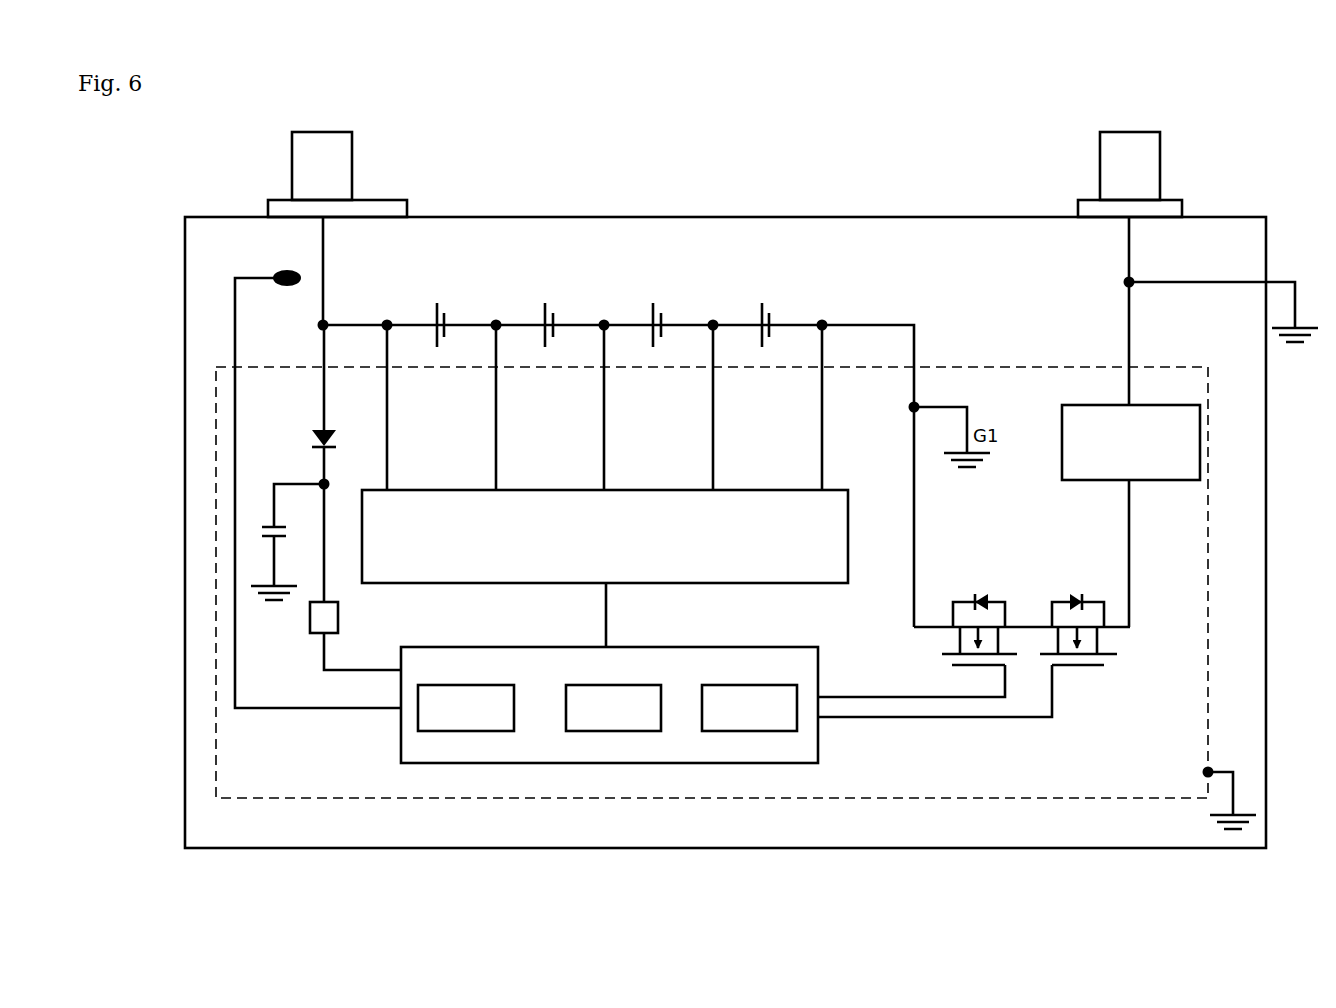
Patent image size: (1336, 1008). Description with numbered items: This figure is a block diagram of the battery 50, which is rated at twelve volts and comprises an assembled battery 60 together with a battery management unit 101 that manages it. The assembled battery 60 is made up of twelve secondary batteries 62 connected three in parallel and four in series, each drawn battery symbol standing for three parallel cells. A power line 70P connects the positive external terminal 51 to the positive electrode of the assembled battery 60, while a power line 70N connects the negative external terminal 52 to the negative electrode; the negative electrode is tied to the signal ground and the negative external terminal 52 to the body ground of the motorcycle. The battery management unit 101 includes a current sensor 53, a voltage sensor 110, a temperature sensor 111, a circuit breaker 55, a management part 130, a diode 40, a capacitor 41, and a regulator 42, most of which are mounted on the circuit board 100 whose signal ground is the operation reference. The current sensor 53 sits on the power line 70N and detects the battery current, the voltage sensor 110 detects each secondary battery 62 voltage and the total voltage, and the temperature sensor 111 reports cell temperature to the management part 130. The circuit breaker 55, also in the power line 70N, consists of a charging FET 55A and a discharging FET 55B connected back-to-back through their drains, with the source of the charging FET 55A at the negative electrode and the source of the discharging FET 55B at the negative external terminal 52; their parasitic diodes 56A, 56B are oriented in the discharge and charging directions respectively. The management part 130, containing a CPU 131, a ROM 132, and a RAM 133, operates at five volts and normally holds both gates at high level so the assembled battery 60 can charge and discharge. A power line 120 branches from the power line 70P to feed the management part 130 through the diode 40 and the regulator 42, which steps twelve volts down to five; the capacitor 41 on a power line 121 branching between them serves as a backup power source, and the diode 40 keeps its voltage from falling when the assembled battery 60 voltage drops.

The battery 50 is at (743, 143).
The positive external terminal 51 is at (352, 170).
The negative external terminal 52 is at (1160, 170).
The power line 70P is at (323, 252).
The power line 70N is at (1129, 252).
The temperature sensor 111 is at (284, 270).
The assembled battery 60 is at (616, 429).
The secondary battery 62 is at (805, 274).
The circuit board 100 is at (986, 363).
The diode 40 is at (328, 428).
The capacitor 41 is at (268, 525).
The regulator 42 is at (338, 617).
The power line 120 is at (327, 504).
The power line 121 is at (296, 483).
The voltage sensor 110 is at (773, 490).
The management part 130 is at (609, 678).
The central processing unit 131 is at (452, 731).
The read-only memory 132 is at (608, 731).
The random-access memory 133 is at (750, 731).
The battery management unit 101 is at (388, 735).
The circuit breaker 55 is at (1026, 592).
The charging FET 55A is at (977, 610).
The discharging FET 55B is at (1076, 610).
The parasitic diode 56A is at (981, 600).
The parasitic diode 56B is at (1075, 600).
The current sensor 53 is at (1186, 482).